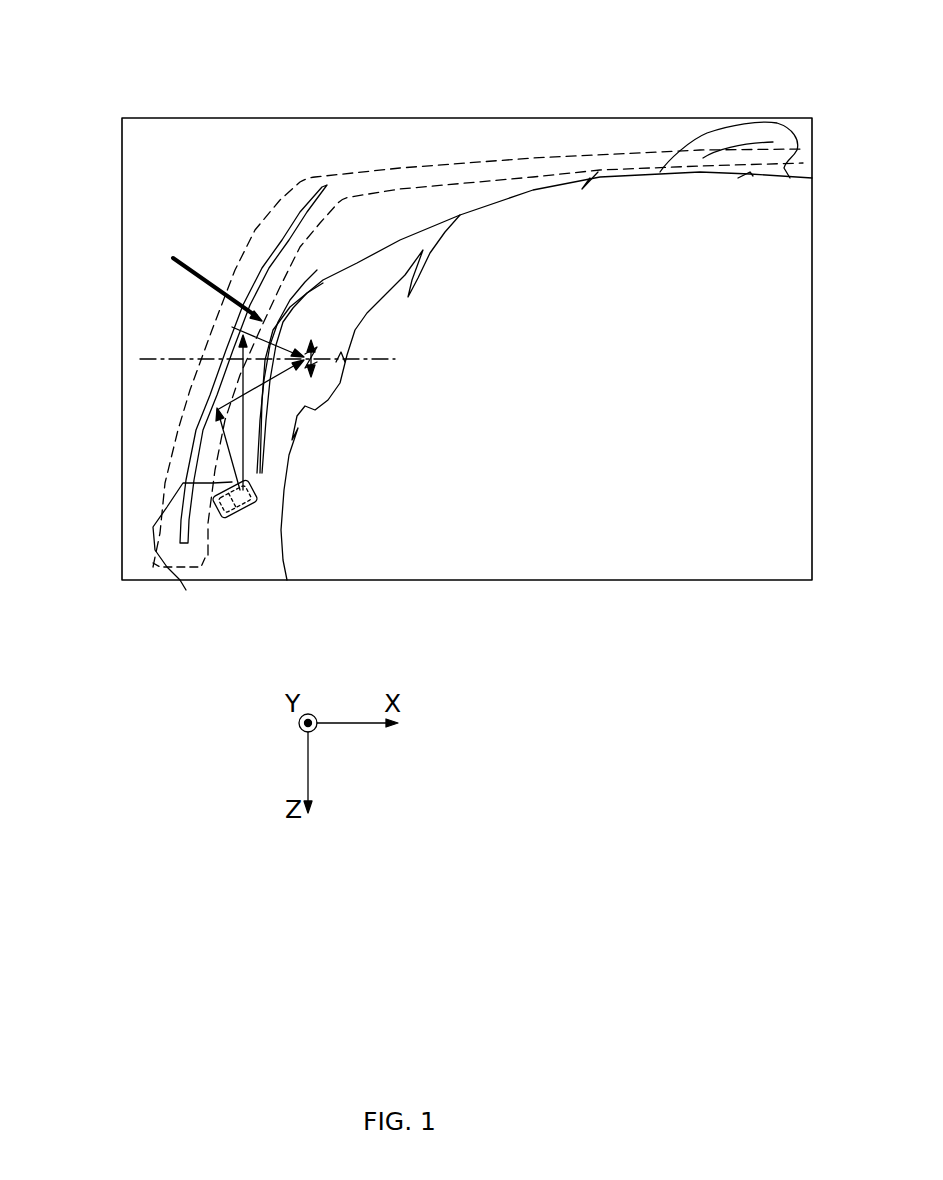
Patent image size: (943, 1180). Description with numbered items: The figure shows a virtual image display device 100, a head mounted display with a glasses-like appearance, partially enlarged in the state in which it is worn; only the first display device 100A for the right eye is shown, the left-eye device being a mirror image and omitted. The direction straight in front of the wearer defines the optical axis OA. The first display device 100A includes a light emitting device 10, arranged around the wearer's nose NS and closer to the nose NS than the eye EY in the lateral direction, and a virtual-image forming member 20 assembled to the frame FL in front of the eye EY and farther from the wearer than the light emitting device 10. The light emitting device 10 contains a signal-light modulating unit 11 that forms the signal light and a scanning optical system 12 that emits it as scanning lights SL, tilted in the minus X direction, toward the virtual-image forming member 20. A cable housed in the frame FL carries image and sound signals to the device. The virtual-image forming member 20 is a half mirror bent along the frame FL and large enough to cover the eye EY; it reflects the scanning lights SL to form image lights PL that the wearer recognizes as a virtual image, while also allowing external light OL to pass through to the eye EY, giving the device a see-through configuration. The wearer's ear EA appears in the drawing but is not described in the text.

The virtual image display device 100 is at (298, 100).
The first display device 100A is at (258, 190).
The light emitting device 10 is at (237, 530).
The signal-light modulating unit 11 is at (208, 555).
The scanning optical system 12 is at (249, 517).
The virtual-image forming member 20 is at (250, 293).
The frame FL is at (528, 158).
The ear EA is at (760, 143).
The eye EY is at (300, 430).
The image lights PL is at (295, 355).
The external light OL is at (228, 290).
The optical axis OA is at (160, 357).
The scanning lights SL is at (245, 465).
The nose NS is at (180, 570).